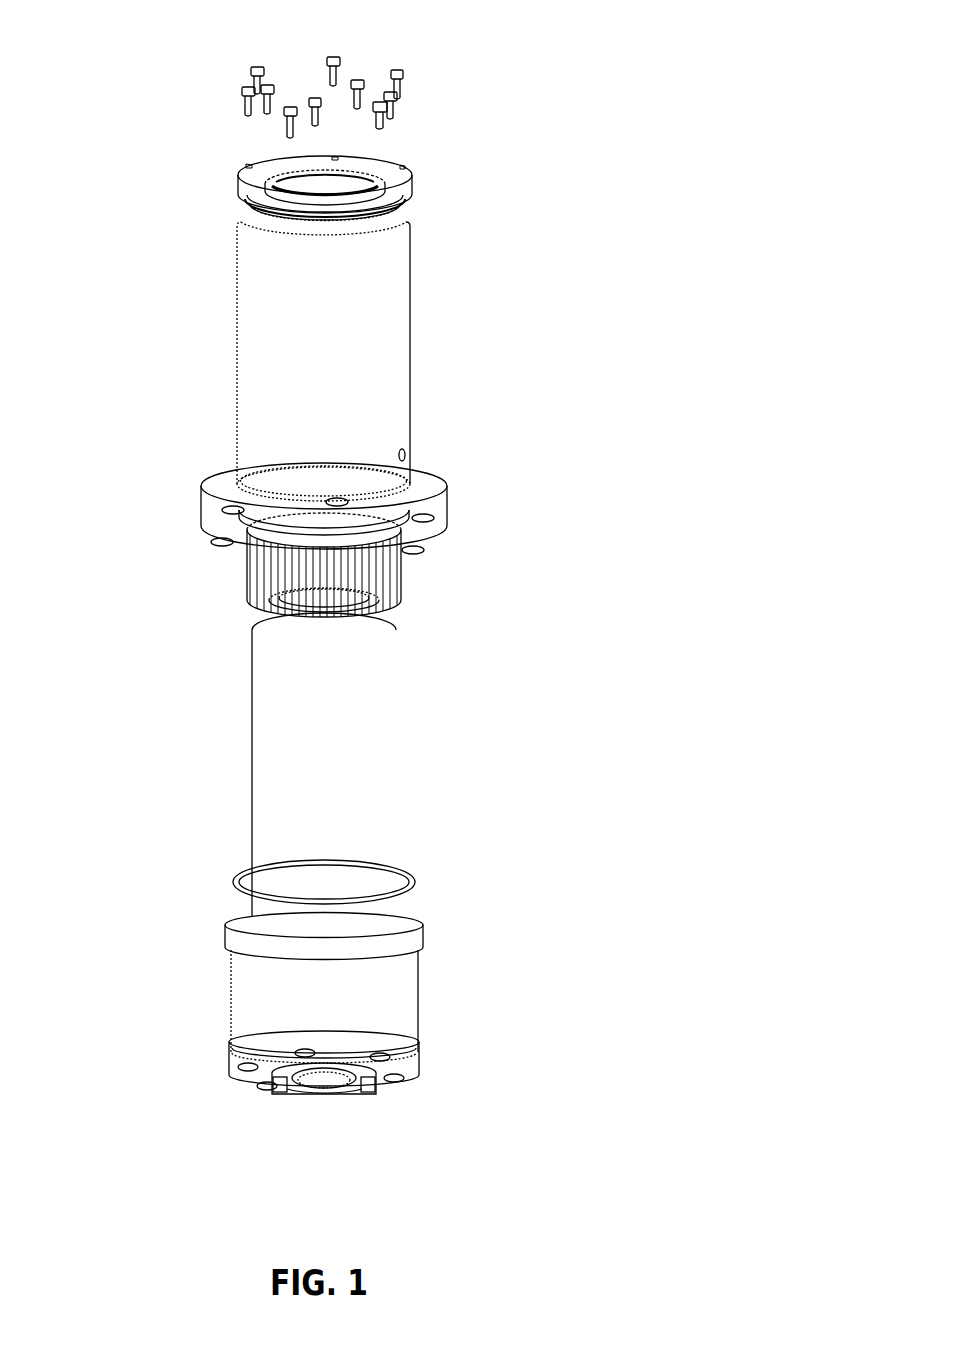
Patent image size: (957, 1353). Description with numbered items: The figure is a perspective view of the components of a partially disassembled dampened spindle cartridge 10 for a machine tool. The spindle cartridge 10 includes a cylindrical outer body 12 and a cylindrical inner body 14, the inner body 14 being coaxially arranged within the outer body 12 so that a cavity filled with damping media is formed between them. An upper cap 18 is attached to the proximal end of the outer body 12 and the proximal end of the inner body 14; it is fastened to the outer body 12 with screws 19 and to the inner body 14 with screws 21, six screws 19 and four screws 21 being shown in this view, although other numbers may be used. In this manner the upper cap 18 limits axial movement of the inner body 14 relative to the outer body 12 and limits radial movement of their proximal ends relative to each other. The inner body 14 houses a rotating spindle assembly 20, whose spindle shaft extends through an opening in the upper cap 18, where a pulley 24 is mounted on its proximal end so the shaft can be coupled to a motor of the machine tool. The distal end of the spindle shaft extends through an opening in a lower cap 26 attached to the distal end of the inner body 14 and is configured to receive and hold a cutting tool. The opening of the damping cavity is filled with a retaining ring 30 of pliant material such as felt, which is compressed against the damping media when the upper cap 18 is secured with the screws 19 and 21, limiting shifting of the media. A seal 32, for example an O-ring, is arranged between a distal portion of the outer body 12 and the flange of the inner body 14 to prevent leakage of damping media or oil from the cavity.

The spindle cartridge 10 is at (491, 21).
The cylindrical outer body 12 is at (270, 348).
The cylindrical inner body 14 is at (262, 997).
The upper cap 18 is at (247, 178).
The screws 19 is at (248, 108).
The rotating spindle assembly 20 is at (300, 1108).
The screws 21 is at (380, 127).
The pulley 24 is at (263, 565).
The lower cap 26 is at (398, 1072).
The retaining ring 30 is at (397, 208).
The seal 32 is at (400, 880).